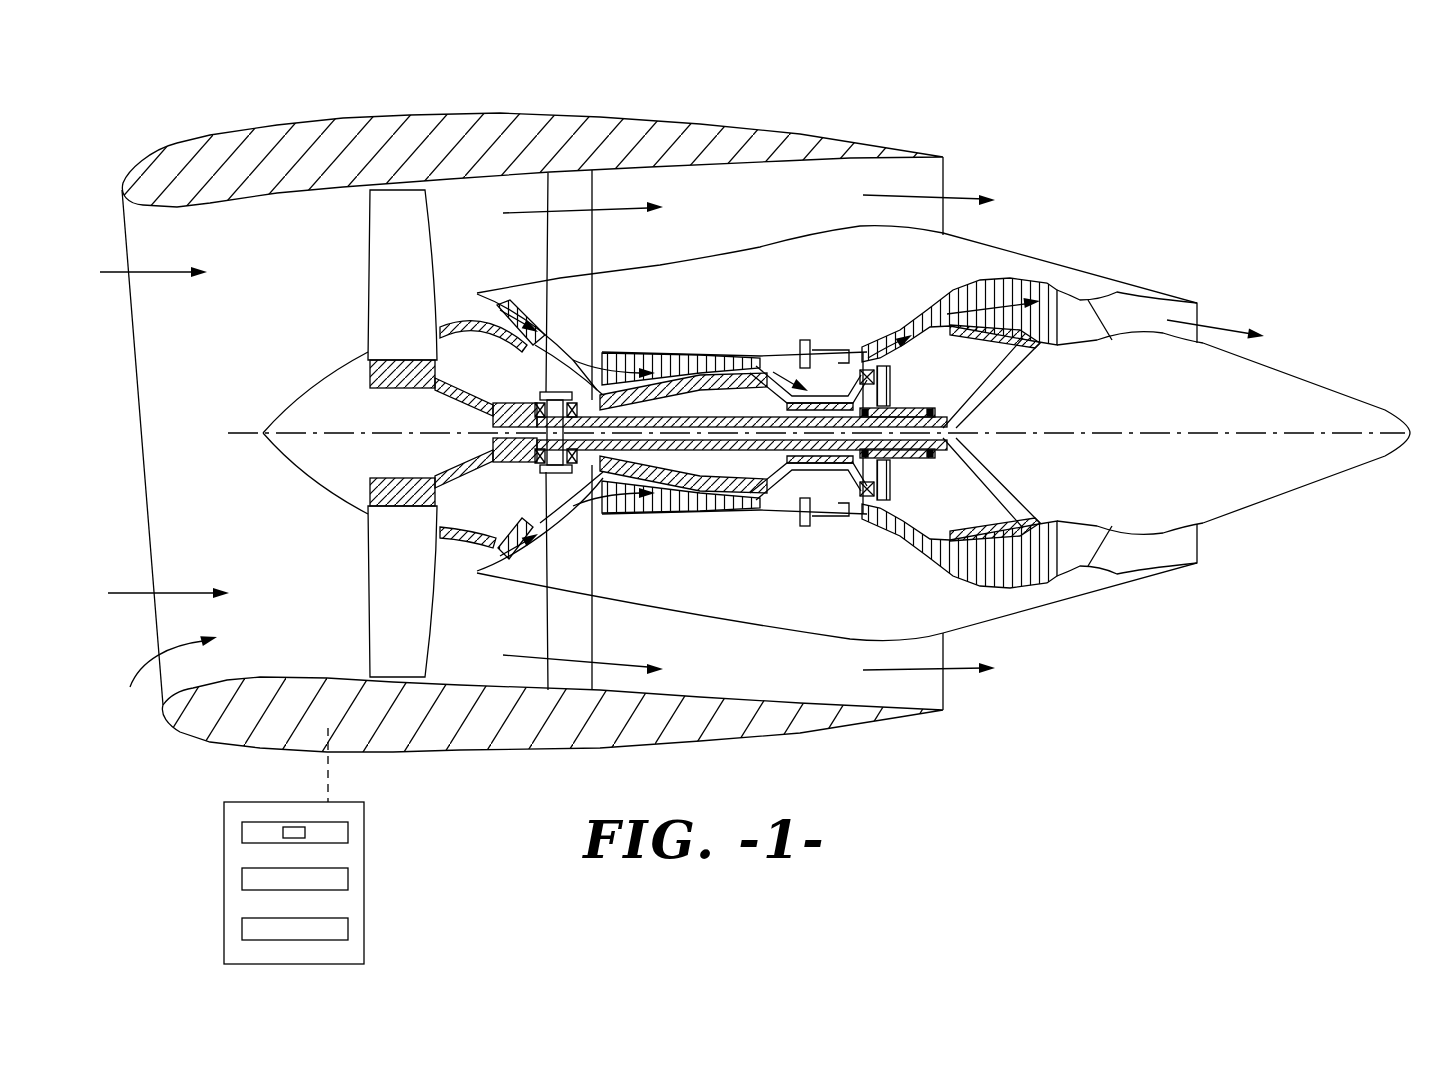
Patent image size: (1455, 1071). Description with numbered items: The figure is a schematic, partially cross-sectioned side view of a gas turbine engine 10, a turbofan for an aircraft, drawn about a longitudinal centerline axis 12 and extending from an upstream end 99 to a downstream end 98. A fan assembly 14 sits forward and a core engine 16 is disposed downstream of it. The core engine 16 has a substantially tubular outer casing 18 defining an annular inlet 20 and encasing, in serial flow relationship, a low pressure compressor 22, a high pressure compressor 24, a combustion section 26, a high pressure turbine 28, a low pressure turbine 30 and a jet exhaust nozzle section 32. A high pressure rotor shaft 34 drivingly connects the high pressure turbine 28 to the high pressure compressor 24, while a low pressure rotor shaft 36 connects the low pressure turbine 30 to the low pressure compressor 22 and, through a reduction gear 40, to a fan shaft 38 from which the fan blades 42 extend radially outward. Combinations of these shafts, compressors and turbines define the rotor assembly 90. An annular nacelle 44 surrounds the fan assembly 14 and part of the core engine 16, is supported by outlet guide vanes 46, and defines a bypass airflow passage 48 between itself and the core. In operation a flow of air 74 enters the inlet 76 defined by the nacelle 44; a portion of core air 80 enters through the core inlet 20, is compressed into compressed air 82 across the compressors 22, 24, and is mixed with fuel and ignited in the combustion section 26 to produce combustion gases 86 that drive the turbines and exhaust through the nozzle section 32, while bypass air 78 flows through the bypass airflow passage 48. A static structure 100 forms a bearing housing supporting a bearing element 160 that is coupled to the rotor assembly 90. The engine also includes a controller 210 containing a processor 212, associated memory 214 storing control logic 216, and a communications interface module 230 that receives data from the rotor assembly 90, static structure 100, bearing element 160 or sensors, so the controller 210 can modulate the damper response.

The gas turbine engine 10 is at (1195, 183).
The axial centerline axis 12 is at (1119, 431).
The fan assembly 14 is at (480, 203).
The core engine 16 is at (800, 218).
The outer casing 18 is at (782, 628).
The annular inlet 20 is at (483, 558).
The low pressure compressor 22 is at (545, 525).
The high pressure compressor 24 is at (623, 503).
The combustion section 26 is at (825, 508).
The high pressure turbine 28 is at (875, 512).
The low pressure turbine 30 is at (1032, 600).
The jet exhaust nozzle section 32 is at (1122, 570).
The high pressure rotor shaft 34 is at (890, 393).
The low pressure rotor shaft 36 is at (977, 385).
The fan shaft 38 is at (440, 397).
The reduction gear 40 is at (540, 393).
The fan blades 42 is at (387, 266).
The nacelle 44 is at (395, 117).
The outlet guide vanes 46 is at (580, 190).
The bypass airflow passage 48 is at (709, 219).
The flow of air 74 is at (160, 267).
The inlet 76 is at (160, 676).
The bypass air 78 is at (607, 213).
The core air 80 is at (470, 303).
The compressed air 82 is at (630, 377).
The combustion gases 86 is at (873, 342).
The rotor assembly 90 is at (683, 388).
The downstream end 98 is at (1421, 441).
The upstream end 99 is at (84, 439).
The static structure 100 is at (490, 478).
The bearing element 160 is at (485, 478).
The controller 210 is at (267, 808).
The processor 212 is at (323, 877).
The memory 214 is at (323, 828).
The control logic 216 is at (287, 832).
The communications interface module 230 is at (323, 925).